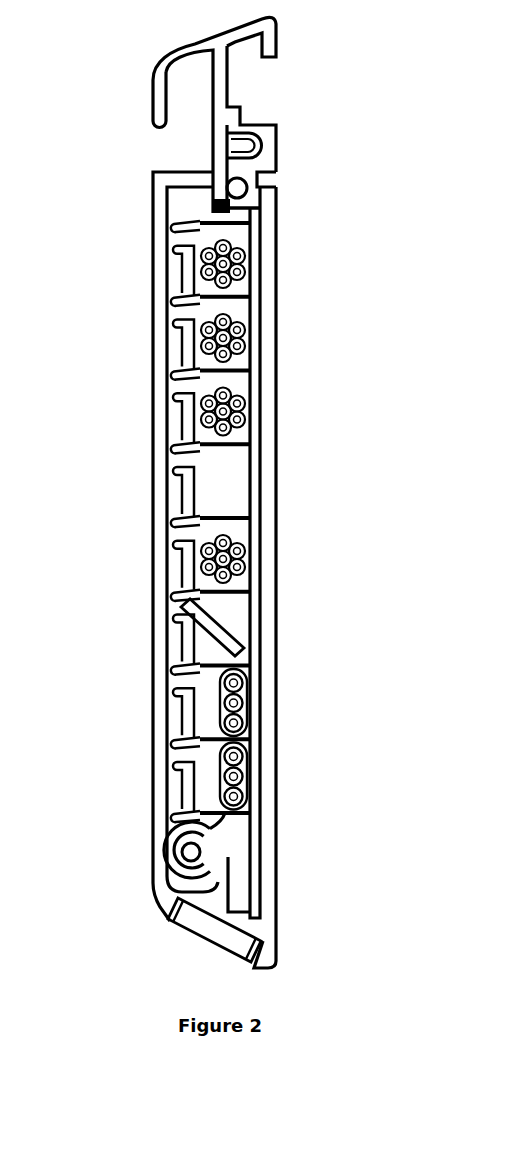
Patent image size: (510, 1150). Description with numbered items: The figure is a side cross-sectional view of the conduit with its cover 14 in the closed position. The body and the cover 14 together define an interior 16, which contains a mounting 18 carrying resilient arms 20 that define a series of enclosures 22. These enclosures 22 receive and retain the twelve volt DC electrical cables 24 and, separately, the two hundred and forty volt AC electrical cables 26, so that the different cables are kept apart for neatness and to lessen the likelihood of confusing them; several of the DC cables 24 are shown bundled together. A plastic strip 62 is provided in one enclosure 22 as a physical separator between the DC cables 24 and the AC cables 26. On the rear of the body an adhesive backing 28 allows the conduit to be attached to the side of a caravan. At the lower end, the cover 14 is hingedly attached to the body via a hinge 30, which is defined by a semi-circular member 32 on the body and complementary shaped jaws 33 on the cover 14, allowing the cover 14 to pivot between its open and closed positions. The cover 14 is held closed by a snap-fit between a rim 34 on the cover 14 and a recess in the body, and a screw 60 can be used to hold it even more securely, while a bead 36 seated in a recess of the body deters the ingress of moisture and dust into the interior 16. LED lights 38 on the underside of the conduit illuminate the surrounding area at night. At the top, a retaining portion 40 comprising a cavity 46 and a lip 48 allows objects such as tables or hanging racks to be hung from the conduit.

The cover 14 is at (152, 665).
The interior 16 is at (178, 208).
The mounting 18 is at (257, 517).
The resilient arms 20 is at (180, 468).
The enclosures 22 is at (227, 478).
The 12 volt DC electrical cables 24 is at (247, 395).
The 240 volt AC electrical cables 26 is at (247, 710).
The adhesive backing 28 is at (277, 270).
The hinge 30 is at (176, 860).
The semi-circular member 32 is at (215, 880).
The complementary shaped jaws 33 is at (156, 835).
The rim 34 is at (226, 137).
The bead 36 is at (248, 173).
The LED lights 38 is at (190, 945).
The retaining portion 40 is at (151, 88).
The cavity 46 is at (177, 142).
The lip 48 is at (152, 120).
The screw 60 is at (252, 137).
The plastic strip 62 is at (228, 623).